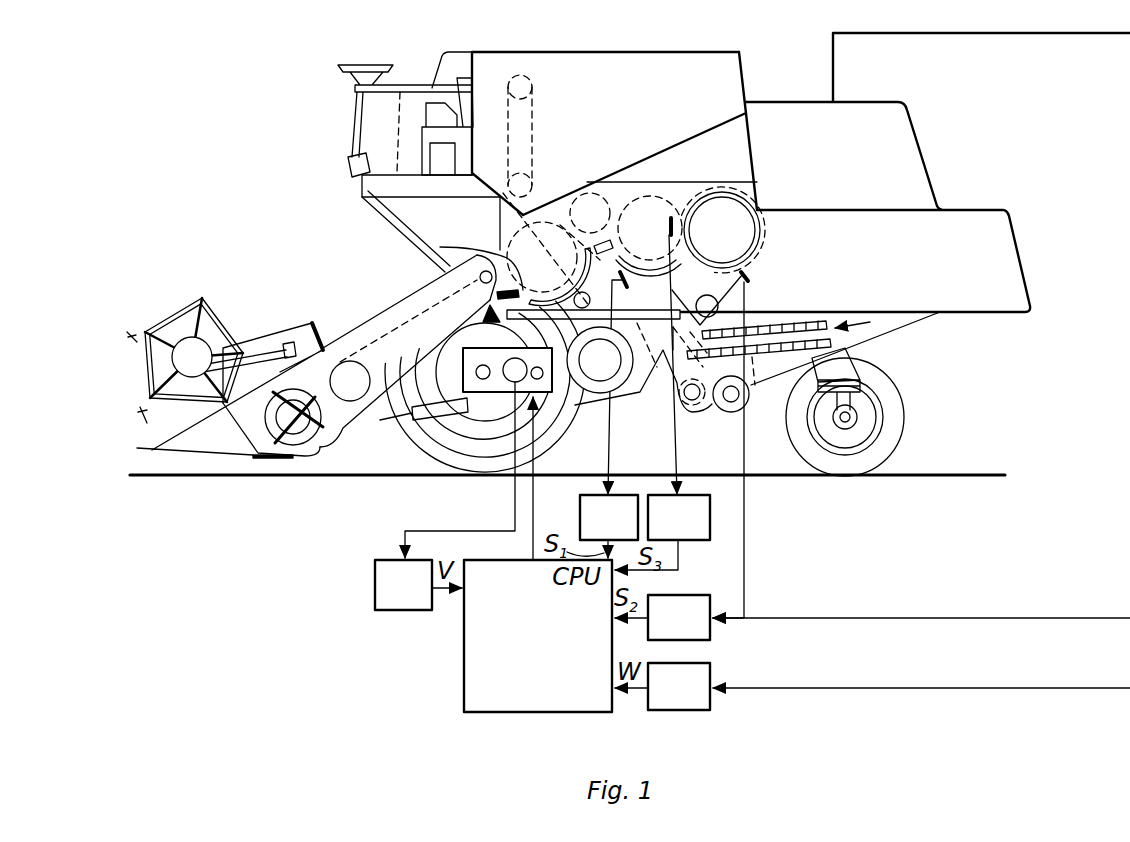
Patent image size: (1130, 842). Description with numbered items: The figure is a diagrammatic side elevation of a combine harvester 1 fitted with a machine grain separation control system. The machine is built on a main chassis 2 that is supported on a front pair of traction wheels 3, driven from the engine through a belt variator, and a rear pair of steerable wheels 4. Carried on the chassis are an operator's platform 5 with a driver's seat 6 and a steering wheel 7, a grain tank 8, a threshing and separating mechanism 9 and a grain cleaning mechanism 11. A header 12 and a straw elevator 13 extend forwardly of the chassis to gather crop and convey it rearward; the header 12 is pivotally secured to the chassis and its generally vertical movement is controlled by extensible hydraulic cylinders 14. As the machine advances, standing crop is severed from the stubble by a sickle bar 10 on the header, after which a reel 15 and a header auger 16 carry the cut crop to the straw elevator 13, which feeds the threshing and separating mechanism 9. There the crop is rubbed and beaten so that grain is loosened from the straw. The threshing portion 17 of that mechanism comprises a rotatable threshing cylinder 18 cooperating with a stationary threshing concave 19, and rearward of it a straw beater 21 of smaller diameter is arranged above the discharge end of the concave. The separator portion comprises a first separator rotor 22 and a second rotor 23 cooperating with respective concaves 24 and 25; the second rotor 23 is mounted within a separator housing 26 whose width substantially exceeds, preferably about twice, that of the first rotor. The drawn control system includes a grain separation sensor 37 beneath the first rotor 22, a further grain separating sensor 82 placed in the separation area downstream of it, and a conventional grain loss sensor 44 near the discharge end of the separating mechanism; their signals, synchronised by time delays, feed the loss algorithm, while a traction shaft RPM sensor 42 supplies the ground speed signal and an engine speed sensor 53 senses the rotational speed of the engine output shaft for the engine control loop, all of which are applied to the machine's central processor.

The combine harvester 1 is at (772, 98).
The main chassis 2 is at (443, 330).
The front traction wheels 3 is at (565, 438).
The rear steerable wheels 4 is at (890, 432).
The operator's platform 5 is at (372, 188).
The driver's seat 6 is at (432, 116).
The steering wheel 7 is at (353, 65).
The grain tank 8 is at (620, 52).
The threshing and separating mechanism 9 is at (679, 178).
The sickle bar 10 is at (253, 457).
The grain cleaning mechanism 11 is at (850, 333).
The header 12 is at (333, 442).
The straw elevator 13 is at (358, 323).
The extensible hydraulic cylinders 14 is at (447, 410).
The reel 15 is at (173, 310).
The header auger 16 is at (307, 443).
The threshing portion 17 is at (549, 182).
The threshing cylinder 18 is at (503, 238).
The threshing concave 19 is at (440, 248).
The straw beater 21 is at (600, 190).
The first separator rotor 22 is at (652, 190).
The second separator rotor 23 is at (760, 236).
The first separator concave 24 is at (638, 383).
The second separator concave 25 is at (748, 295).
The separator housing 26 is at (700, 186).
The grain separation sensor 37 is at (609, 517).
The traction shaft RPM sensor 42 is at (403, 585).
The grain loss sensor 44 is at (679, 517).
The engine speed sensor 53 is at (679, 686).
The grain separating sensor 82 is at (679, 617).